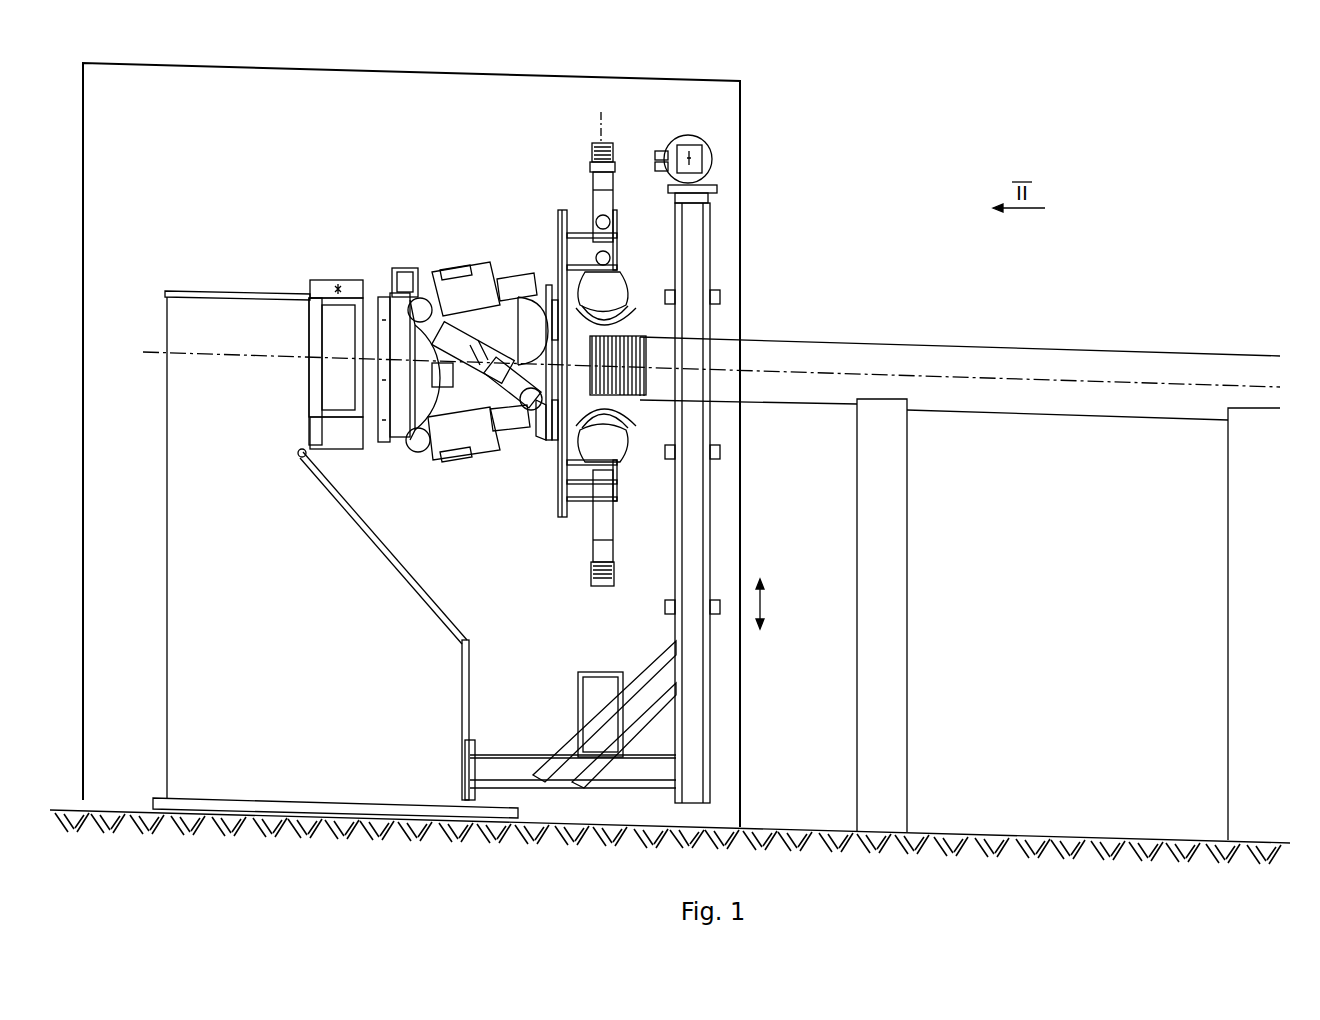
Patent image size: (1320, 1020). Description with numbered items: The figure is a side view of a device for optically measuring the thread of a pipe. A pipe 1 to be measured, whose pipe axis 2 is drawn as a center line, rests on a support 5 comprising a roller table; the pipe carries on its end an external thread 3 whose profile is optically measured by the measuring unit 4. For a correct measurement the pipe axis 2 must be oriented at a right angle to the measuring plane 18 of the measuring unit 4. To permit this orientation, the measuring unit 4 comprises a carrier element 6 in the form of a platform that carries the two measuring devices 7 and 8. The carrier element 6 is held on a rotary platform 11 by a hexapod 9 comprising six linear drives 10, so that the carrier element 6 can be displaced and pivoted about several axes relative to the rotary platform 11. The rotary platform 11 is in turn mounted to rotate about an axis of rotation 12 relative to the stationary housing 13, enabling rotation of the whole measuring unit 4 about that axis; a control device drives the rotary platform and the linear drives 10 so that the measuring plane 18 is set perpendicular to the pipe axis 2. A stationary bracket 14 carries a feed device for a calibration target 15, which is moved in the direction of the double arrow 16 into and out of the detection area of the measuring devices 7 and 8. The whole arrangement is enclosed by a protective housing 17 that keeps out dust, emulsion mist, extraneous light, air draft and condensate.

The pipe 1 is at (1130, 343).
The pipe axis 2 is at (1218, 386).
The external thread 3 is at (633, 340).
The measuring unit 4 is at (545, 180).
The support 5 is at (895, 590).
The carrier element 6 is at (553, 240).
The measuring device 7 is at (610, 440).
The measuring device 8 is at (610, 285).
The hexapod 9 is at (442, 240).
The linear drives 10 is at (455, 438).
The rotary platform 11 is at (388, 298).
The axis of rotation 12 is at (290, 362).
The stationary housing 13 is at (228, 292).
The stationary bracket 14 is at (695, 710).
The calibration target 15 is at (600, 690).
The double arrow 16 is at (770, 604).
The protective housing 17 is at (437, 72).
The measuring plane 18 is at (602, 124).